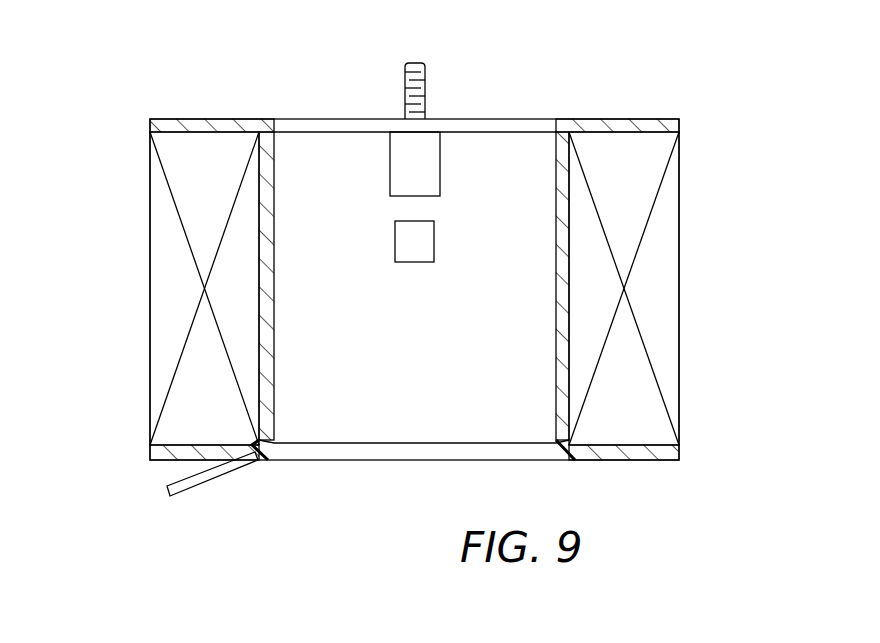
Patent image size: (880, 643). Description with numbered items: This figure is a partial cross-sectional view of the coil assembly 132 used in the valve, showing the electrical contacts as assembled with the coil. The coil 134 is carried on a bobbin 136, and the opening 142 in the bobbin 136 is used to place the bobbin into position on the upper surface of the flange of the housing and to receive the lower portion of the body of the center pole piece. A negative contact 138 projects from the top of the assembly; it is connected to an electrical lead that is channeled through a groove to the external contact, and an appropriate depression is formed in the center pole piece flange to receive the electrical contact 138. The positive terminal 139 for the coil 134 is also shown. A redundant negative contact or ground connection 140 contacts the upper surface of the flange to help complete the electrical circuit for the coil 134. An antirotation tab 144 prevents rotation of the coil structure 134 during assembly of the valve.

The coil assembly 132 is at (118, 397).
The coil 134 is at (665, 283).
The bobbin 136 is at (604, 117).
The negative contact 138 is at (413, 62).
The positive terminal 139 is at (413, 262).
The redundant negative contact 140 is at (188, 486).
The opening 142 is at (338, 423).
The antirotation tab 144 is at (446, 163).